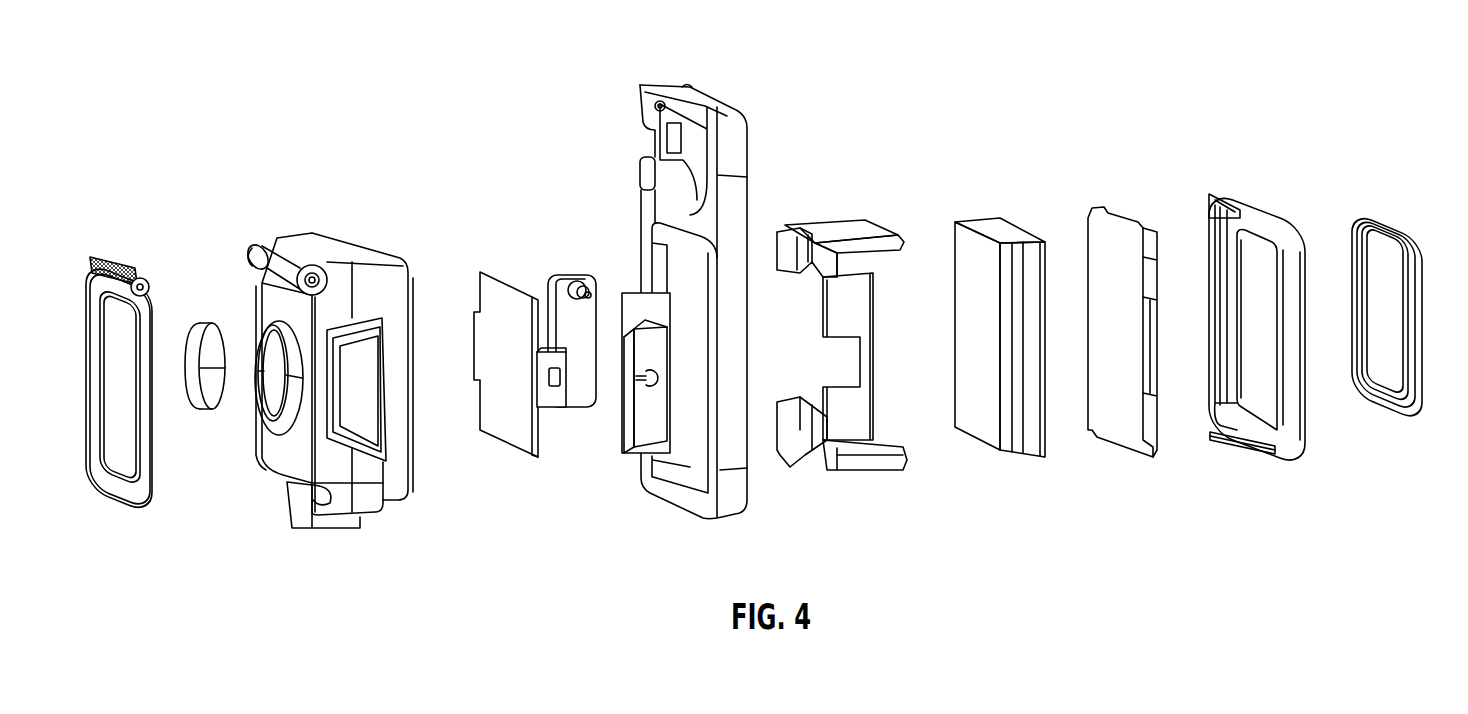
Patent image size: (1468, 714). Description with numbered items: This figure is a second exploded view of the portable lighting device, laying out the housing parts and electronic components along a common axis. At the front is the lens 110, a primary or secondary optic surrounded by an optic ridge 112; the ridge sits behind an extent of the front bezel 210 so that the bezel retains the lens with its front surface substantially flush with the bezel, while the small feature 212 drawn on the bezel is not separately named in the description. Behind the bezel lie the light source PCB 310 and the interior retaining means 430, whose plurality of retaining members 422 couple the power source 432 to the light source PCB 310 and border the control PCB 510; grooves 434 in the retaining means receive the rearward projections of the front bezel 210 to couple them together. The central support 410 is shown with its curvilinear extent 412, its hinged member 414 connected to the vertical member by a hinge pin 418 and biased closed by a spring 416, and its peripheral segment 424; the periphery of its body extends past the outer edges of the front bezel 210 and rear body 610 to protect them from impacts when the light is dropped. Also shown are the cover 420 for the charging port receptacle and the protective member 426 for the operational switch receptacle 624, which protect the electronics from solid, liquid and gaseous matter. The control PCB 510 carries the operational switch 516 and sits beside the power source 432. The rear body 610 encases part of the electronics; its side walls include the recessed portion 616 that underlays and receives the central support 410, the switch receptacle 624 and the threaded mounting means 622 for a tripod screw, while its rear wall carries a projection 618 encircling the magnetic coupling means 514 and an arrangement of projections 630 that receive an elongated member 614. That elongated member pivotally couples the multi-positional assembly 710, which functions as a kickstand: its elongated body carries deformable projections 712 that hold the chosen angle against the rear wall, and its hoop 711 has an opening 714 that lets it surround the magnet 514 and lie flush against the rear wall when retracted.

The lens 110 is at (1402, 290).
The optic ridge 112 is at (1370, 222).
The front bezel 210 is at (1265, 310).
The latch 212 is at (1211, 212).
The light source PCB 310 is at (1107, 242).
The central support 410 is at (681, 290).
The curvilinear extent 412 is at (732, 128).
The hinged member 414 is at (707, 97).
The spring 416 is at (688, 87).
The hinge pin 418 is at (656, 102).
The cover 420 is at (571, 348).
The retaining members 422 is at (900, 240).
The peripheral segment 424 is at (638, 133).
The protective member 426 is at (648, 413).
The interior retaining means 430 is at (851, 325).
The power source 432 is at (983, 418).
The grooves 434 is at (819, 234).
The control PCB 510 is at (507, 303).
The coupling means 514 is at (207, 328).
The operational switch 516 is at (558, 388).
The rear body 610 is at (343, 375).
The elongated member 614 is at (297, 236).
The recessed portion 616 is at (367, 240).
The projection 618 is at (262, 430).
The mounting means 622 is at (307, 522).
The operational switch receptacle 624 is at (358, 416).
The arrangement of projections 630 is at (256, 252).
The multi-positional assembly 710 is at (178, 392).
The hoop 711 is at (152, 492).
The plurality of projections 712 is at (112, 262).
The opening 714 is at (148, 281).